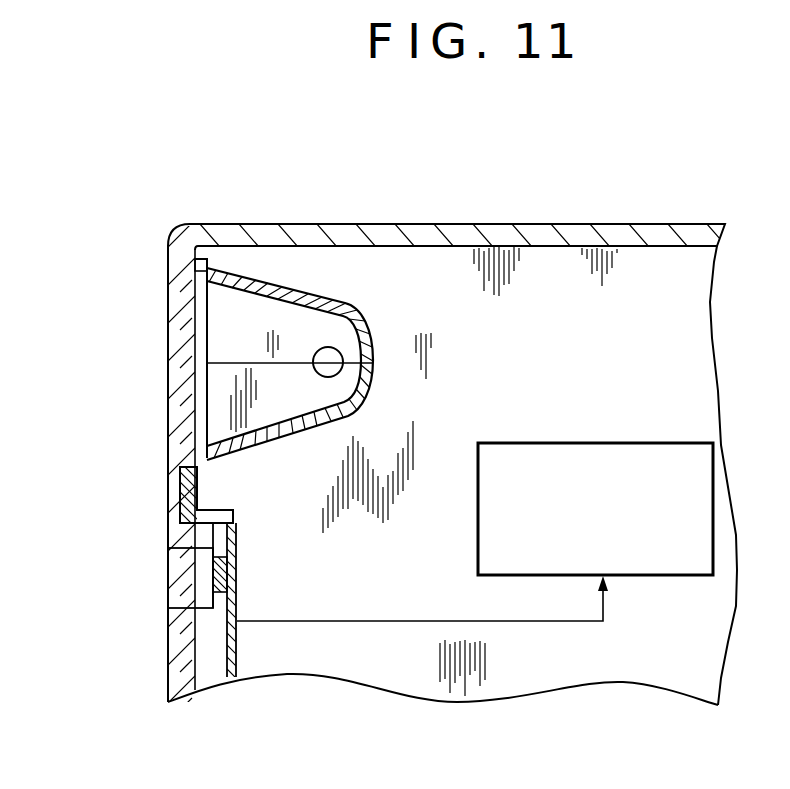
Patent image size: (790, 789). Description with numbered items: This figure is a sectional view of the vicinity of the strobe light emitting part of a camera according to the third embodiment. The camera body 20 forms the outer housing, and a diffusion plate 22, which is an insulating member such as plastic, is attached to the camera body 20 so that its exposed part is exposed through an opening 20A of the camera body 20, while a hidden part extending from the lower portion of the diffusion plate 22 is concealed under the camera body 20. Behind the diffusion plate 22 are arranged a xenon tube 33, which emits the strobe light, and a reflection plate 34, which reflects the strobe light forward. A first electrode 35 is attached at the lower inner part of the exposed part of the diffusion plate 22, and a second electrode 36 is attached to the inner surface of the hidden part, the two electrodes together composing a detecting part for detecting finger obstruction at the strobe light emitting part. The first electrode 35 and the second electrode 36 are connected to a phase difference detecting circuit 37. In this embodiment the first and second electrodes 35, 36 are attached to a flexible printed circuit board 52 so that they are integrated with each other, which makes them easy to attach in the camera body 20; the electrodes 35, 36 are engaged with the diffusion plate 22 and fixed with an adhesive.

The camera body 20 is at (343, 230).
The opening 20A is at (167, 282).
The diffusion plate 22 is at (177, 345).
The xenon tube 33 is at (323, 357).
The reflection plate 34 is at (372, 380).
The first electrode 35 is at (180, 510).
The second electrode 36 is at (195, 575).
The phase difference detecting circuit 37 is at (615, 443).
The flexible printed circuit board 52 is at (237, 560).